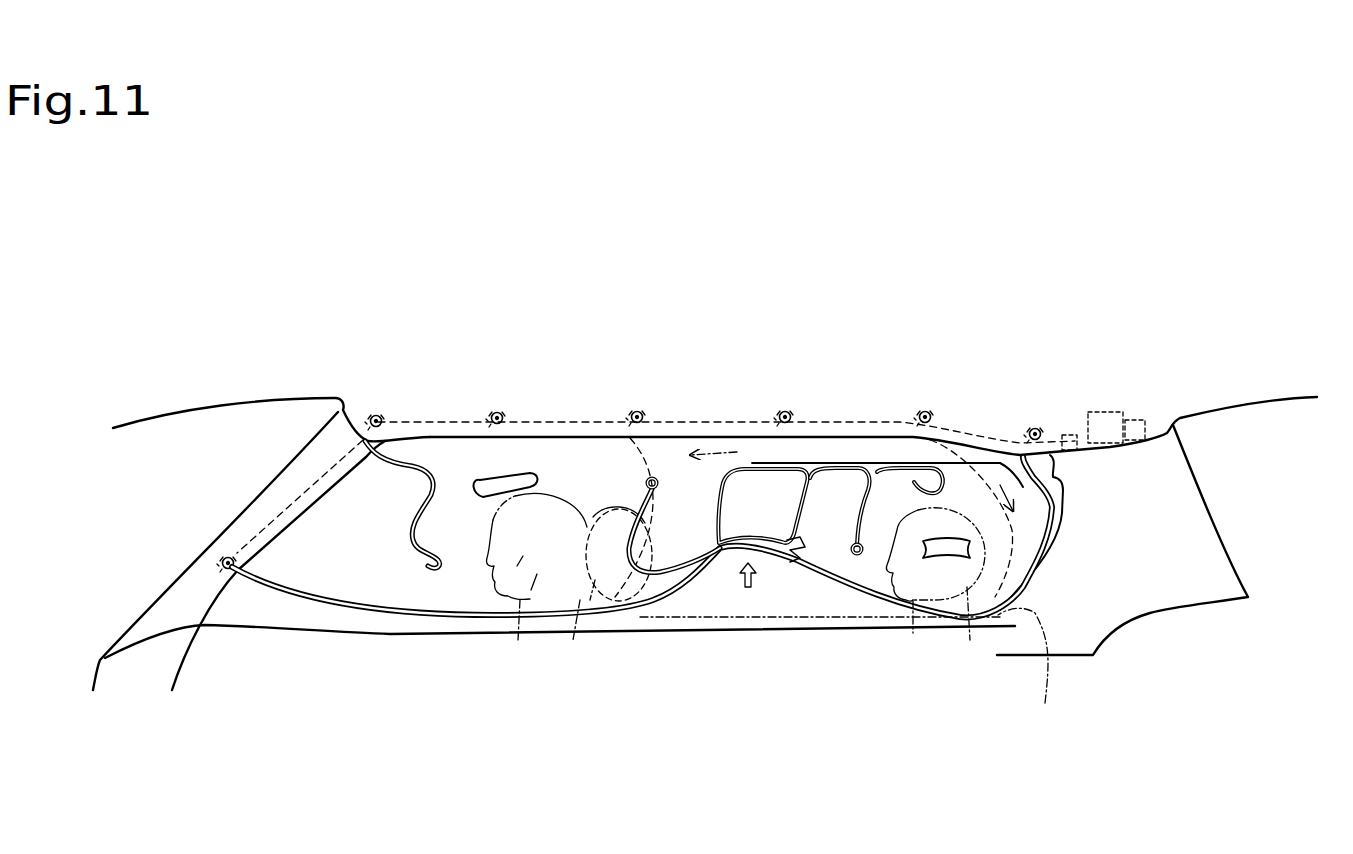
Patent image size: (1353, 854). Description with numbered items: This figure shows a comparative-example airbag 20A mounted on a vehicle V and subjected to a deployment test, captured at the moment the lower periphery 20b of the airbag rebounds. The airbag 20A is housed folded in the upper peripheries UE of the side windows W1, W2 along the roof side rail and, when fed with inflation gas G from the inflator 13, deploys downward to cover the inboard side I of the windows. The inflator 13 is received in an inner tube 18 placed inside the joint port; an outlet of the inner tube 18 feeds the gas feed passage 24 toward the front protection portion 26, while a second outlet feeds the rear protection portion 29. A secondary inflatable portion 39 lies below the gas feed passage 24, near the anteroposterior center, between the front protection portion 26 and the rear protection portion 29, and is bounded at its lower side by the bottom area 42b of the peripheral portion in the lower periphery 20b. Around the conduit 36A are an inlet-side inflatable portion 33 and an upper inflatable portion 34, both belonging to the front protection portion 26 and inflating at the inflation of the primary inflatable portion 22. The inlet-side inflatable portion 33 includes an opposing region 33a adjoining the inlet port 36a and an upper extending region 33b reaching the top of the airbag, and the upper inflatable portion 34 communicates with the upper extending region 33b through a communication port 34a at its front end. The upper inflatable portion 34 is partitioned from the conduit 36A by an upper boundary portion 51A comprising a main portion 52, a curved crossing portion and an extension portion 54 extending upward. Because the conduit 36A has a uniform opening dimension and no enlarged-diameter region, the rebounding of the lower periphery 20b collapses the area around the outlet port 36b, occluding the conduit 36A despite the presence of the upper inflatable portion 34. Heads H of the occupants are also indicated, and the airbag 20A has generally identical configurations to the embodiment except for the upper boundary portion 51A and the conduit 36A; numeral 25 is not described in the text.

The inflator 13 is at (1100, 443).
The inner tube 18 is at (893, 447).
The gas feed passage 24 is at (848, 452).
The upper peripheries of side windows UE is at (438, 420).
The airbag 20A is at (608, 617).
The side window W1 is at (297, 622).
The upper extending region 33b is at (593, 493).
The inlet-side inflatable portion 33 is at (557, 517).
The extension portion 54 is at (625, 510).
The head of front occupant H is at (518, 640).
The opposing region 33a is at (587, 527).
The upper inflatable portion 34 is at (687, 527).
The communication port 34a is at (650, 476).
The outlet port 36b is at (844, 606).
The upper boundary portion 51A is at (844, 606).
The main portion 52 is at (728, 577).
The inlet port 36a is at (652, 590).
The conduit 36A is at (678, 583).
The secondary inflatable portion 39 is at (785, 507).
The inflation gas G is at (863, 479).
The lower periphery 20b is at (810, 649).
The bottom area 42b is at (777, 560).
The side window W2 is at (857, 620).
The primary inflatable portion 22 is at (717, 688).
The pillar trim 25 is at (717, 688).
The front protection portion 26 is at (460, 587).
The rear protection portion 29 is at (948, 590).
The inboard side I is at (370, 682).
The vehicle V is at (262, 332).